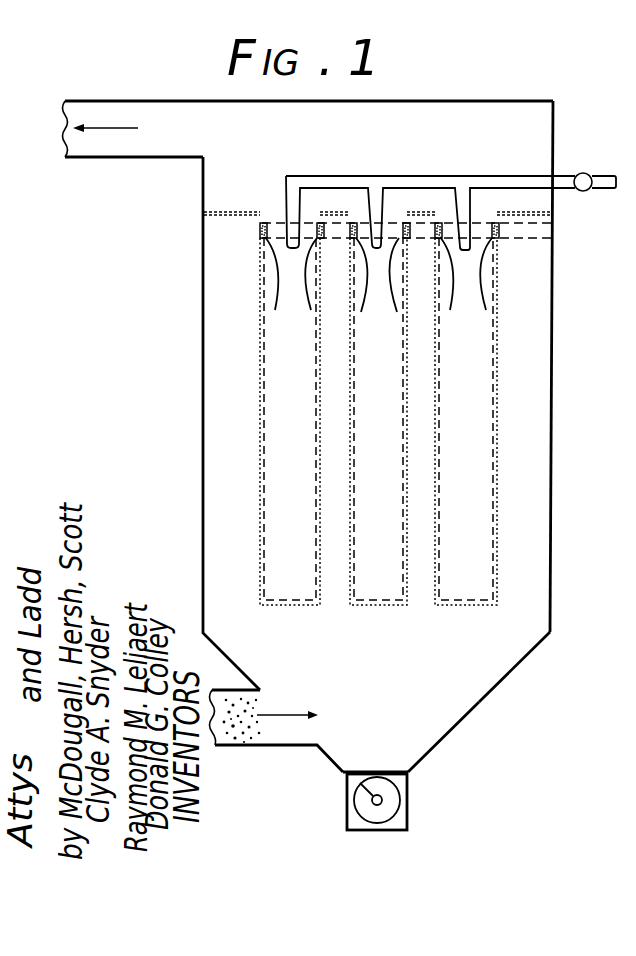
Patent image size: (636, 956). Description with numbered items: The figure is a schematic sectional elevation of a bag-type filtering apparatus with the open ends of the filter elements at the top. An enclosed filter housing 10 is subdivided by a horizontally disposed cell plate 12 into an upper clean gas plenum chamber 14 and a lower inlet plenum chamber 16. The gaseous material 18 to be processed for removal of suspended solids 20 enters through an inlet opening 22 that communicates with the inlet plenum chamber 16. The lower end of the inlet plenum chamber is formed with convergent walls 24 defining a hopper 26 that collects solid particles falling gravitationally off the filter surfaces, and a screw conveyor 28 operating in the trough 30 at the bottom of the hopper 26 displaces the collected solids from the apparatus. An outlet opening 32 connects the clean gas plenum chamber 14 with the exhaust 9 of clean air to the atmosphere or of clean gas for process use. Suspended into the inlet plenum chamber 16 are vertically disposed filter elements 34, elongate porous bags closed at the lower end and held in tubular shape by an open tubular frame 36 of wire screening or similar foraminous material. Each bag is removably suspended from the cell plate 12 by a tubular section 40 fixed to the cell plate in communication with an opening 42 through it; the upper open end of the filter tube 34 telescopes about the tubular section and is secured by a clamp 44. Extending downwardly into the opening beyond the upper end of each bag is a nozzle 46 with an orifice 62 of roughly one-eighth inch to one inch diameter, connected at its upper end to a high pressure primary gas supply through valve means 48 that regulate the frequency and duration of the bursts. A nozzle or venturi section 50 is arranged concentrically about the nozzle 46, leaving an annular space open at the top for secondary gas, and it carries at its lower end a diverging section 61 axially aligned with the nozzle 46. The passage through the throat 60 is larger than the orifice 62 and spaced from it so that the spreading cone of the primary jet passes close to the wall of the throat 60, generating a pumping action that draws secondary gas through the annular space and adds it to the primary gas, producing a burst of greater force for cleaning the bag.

The exhaust 9 is at (73, 118).
The filter housing 10 is at (555, 309).
The cell plate 12 is at (528, 217).
The clean gas plenum chamber 14 is at (404, 133).
The inlet plenum chamber 16 is at (362, 679).
The gaseous material 18 is at (248, 737).
The suspended solids 20 is at (256, 736).
The inlet opening 22 is at (302, 730).
The convergent walls 24 is at (447, 731).
The hopper 26 is at (503, 683).
The screw conveyor 28 is at (391, 786).
The trough 30 is at (408, 813).
The outlet opening 32 is at (197, 143).
The filter elements 34 is at (258, 464).
The open tubular frame 36 is at (266, 406).
The tubular section 40 is at (404, 224).
The opening 42 is at (275, 229).
The clamp 44 is at (258, 231).
The nozzle 46 is at (301, 217).
The valve means 48 is at (585, 172).
The venturi section 50 is at (274, 285).
The throat 60 is at (473, 267).
The diverging section 61 is at (473, 307).
The orifice 62 is at (291, 252).